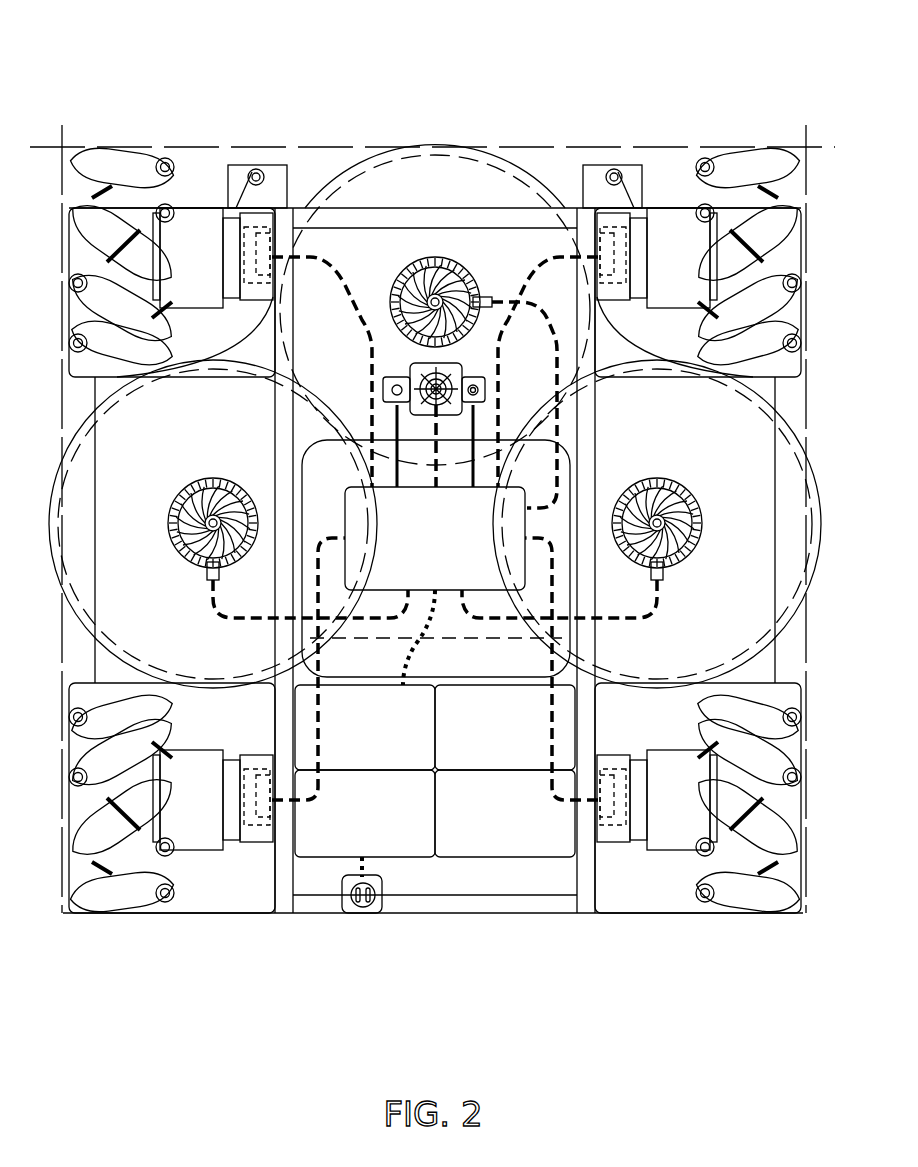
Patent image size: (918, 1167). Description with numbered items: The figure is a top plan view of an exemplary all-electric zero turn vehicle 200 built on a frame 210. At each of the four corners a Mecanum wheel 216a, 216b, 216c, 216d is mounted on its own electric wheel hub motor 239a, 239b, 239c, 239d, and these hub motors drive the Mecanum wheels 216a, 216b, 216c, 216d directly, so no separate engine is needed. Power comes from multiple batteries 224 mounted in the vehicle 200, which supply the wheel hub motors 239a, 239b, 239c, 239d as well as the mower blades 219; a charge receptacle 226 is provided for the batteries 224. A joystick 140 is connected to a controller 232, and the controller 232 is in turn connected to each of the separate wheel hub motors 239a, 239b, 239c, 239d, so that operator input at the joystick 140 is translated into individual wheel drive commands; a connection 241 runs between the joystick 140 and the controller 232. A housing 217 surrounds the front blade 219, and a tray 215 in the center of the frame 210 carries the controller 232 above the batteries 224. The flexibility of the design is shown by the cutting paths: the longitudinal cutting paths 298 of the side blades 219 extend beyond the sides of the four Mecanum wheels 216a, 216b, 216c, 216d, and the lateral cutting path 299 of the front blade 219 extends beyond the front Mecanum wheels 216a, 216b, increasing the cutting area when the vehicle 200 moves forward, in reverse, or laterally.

The vehicle 200 is at (248, 68).
The frame 210 is at (478, 915).
The tray 215 is at (308, 448).
The Mecanum wheel 216a is at (143, 158).
The Mecanum wheel 216b is at (727, 158).
The Mecanum wheel 216c is at (143, 897).
The Mecanum wheel 216d is at (727, 897).
The housing 217 is at (444, 143).
The mower blade 219 is at (512, 150).
The battery 224 is at (374, 753).
The charge receptacle 226 is at (372, 913).
The controller 232 is at (415, 569).
The wheel hub motor 239a is at (163, 252).
The wheel hub motor 239b is at (650, 252).
The wheel hub motor 239c is at (163, 823).
The wheel hub motor 239d is at (650, 823).
The cable 241 is at (432, 470).
The joystick 140 is at (445, 366).
The longitudinal cutting path 298 is at (62, 128).
The lateral cutting path 299 is at (298, 146).